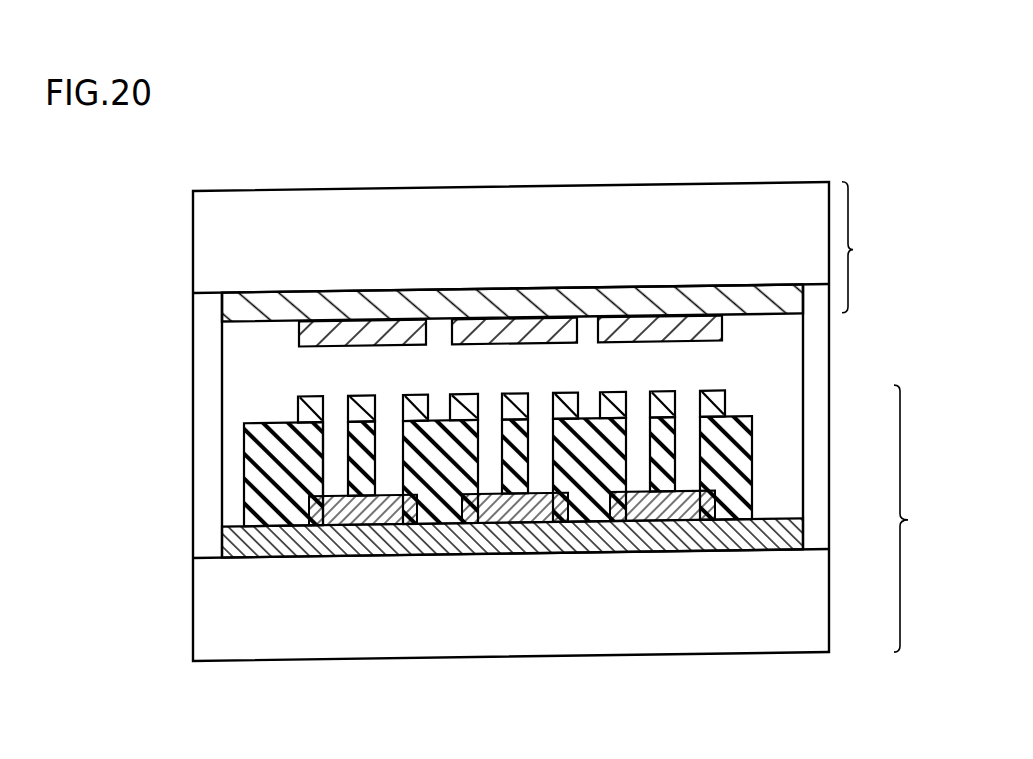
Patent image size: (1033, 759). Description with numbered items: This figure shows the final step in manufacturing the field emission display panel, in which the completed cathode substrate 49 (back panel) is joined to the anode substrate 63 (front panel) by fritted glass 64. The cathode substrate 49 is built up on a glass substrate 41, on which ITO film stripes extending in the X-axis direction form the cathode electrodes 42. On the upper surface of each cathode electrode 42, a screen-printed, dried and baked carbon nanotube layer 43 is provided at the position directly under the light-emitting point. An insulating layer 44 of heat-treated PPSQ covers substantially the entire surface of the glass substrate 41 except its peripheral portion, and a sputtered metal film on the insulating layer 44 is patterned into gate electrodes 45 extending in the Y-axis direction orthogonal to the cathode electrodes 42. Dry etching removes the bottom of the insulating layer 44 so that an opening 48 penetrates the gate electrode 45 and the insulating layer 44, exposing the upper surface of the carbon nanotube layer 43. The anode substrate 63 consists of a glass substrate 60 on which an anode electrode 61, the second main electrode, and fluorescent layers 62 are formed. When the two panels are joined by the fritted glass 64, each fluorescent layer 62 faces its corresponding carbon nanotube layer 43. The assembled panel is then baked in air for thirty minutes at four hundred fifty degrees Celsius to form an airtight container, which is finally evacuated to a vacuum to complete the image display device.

The glass substrate 41 is at (238, 617).
The cathode electrode 42 is at (783, 528).
The carbon nanotube layer 43 is at (330, 514).
The insulating layer 44 is at (733, 460).
The gate electrode 45 is at (712, 411).
The opening 48 is at (327, 445).
The cathode substrate 49 is at (915, 518).
The glass substrate 60 is at (620, 231).
The anode electrode 61 is at (383, 308).
The fluorescent layer 62 is at (511, 340).
The anode substrate 63 is at (864, 247).
The fritted glass 64 is at (817, 361).